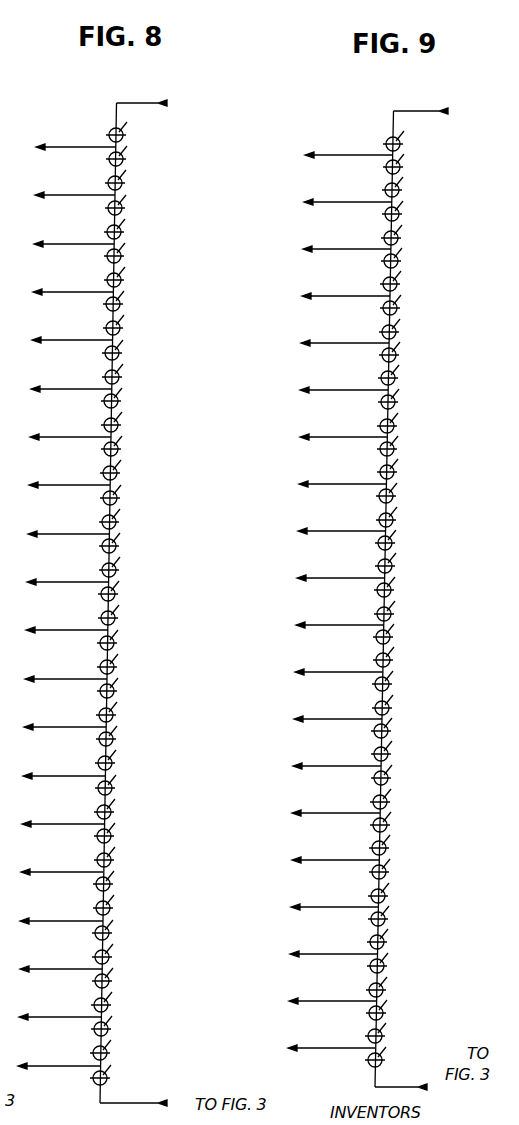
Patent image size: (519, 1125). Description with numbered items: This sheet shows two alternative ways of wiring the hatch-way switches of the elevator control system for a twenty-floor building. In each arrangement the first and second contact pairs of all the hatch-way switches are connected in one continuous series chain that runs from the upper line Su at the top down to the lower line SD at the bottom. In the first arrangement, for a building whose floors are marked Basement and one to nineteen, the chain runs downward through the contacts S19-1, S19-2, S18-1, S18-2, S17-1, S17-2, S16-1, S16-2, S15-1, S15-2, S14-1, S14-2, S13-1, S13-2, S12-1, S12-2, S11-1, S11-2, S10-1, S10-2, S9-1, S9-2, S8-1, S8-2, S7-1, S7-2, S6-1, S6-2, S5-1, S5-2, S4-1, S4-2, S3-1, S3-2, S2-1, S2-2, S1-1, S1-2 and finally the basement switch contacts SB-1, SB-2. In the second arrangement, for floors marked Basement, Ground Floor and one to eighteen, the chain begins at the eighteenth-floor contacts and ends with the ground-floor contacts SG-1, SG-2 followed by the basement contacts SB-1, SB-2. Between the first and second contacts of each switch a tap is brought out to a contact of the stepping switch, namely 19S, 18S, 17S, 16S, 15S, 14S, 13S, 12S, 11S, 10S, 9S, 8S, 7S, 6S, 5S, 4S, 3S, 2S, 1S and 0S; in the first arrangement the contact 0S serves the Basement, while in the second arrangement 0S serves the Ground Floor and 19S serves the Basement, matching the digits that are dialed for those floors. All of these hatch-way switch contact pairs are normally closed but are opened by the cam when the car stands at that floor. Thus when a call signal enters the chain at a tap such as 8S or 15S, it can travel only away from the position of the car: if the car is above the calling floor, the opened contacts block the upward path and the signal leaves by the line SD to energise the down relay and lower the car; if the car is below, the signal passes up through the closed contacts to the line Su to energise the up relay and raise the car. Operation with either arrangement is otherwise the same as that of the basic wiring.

In FIG. 8, the upper line Su is at (153, 103).
In FIG. 9, the upper line Su is at (432, 111).
In FIG. 8, the lower line SD is at (146, 1103).
In FIG. 9, the lower line SD is at (415, 1087).
In FIG. 8, the stepping switch contact for floor nineteen 19S is at (61, 147).
In FIG. 9, the stepping switch contact for floor nineteen 19S is at (316, 1048).
In FIG. 8, the stepping switch contact for floor eighteen 18S is at (60, 195).
In FIG. 9, the stepping switch contact for floor eighteen 18S is at (334, 155).
In FIG. 8, the stepping switch contact for floor seventeen 17S is at (59, 244).
In FIG. 9, the stepping switch contact for floor seventeen 17S is at (333, 202).
In FIG. 8, the stepping switch contact for floor sixteen 16S is at (58, 292).
In FIG. 9, the stepping switch contact for floor sixteen 16S is at (332, 249).
In FIG. 8, the stepping switch contact for floor fifteen 15S is at (57, 340).
In FIG. 9, the stepping switch contact for floor fifteen 15S is at (331, 296).
In FIG. 8, the stepping switch contact for floor fourteen 14S is at (56, 389).
In FIG. 9, the stepping switch contact for floor fourteen 14S is at (330, 343).
In FIG. 8, the stepping switch contact for floor thirteen 13S is at (55, 437).
In FIG. 9, the stepping switch contact for floor thirteen 13S is at (329, 390).
In FIG. 8, the stepping switch contact for floor twelve 12S is at (55, 485).
In FIG. 9, the stepping switch contact for floor twelve 12S is at (328, 437).
In FIG. 8, the stepping switch contact for floor eleven 11S is at (54, 534).
In FIG. 9, the stepping switch contact for floor eleven 11S is at (327, 484).
In FIG. 8, the stepping switch contact for floor ten 10S is at (54, 582).
In FIG. 9, the stepping switch contact for floor ten 10S is at (326, 531).
In FIG. 8, the stepping switch contact for floor nine 9S is at (56, 630).
In FIG. 9, the stepping switch contact for floor nine 9S is at (330, 578).
In FIG. 8, the stepping switch contact for floor eight 8S is at (55, 679).
In FIG. 9, the stepping switch contact for floor eight 8S is at (329, 625).
In FIG. 8, the stepping switch contact for floor seven 7S is at (54, 727).
In FIG. 9, the stepping switch contact for floor seven 7S is at (328, 672).
In FIG. 8, the stepping switch contact for floor six 6S is at (53, 776).
In FIG. 9, the stepping switch contact for floor six 6S is at (327, 719).
In FIG. 8, the stepping switch contact for floor five 5S is at (52, 824).
In FIG. 9, the stepping switch contact for floor five 5S is at (326, 766).
In FIG. 8, the stepping switch contact for floor four 4S is at (51, 872).
In FIG. 9, the stepping switch contact for floor four 4S is at (325, 813).
In FIG. 8, the stepping switch contact for floor three 3S is at (51, 921).
In FIG. 9, the stepping switch contact for floor three 3S is at (325, 860).
In FIG. 8, the stepping switch contact for floor two 2S is at (51, 969).
In FIG. 9, the stepping switch contact for floor two 2S is at (324, 907).
In FIG. 8, the stepping switch contact for floor one 1S is at (50, 1017).
In FIG. 9, the stepping switch contact for floor one 1S is at (323, 954).
In FIG. 8, the stepping switch contact for dialed zero 0S is at (50, 1066).
In FIG. 9, the stepping switch contact for dialed zero 0S is at (322, 1001).
In FIG. 8, the first contacts of nineteenth-floor hatch-way switch S19-1 is at (133, 132).
In FIG. 8, the second contacts of nineteenth-floor hatch-way switch S19-2 is at (133, 156).
In FIG. 8, the first contacts of eighteenth-floor hatch-way switch S18-1 is at (132, 180).
In FIG. 9, the first contacts of eighteenth-floor hatch-way switch S18-1 is at (410, 141).
In FIG. 8, the second contacts of eighteenth-floor hatch-way switch S18-2 is at (132, 205).
In FIG. 9, the second contacts of eighteenth-floor hatch-way switch S18-2 is at (410, 164).
In FIG. 8, the first contacts of seventeenth-floor hatch-way switch S17-1 is at (131, 229).
In FIG. 9, the first contacts of seventeenth-floor hatch-way switch S17-1 is at (409, 187).
In FIG. 8, the second contacts of seventeenth-floor hatch-way switch S17-2 is at (131, 253).
In FIG. 9, the second contacts of seventeenth-floor hatch-way switch S17-2 is at (409, 211).
In FIG. 8, the first contacts of sixteenth-floor hatch-way switch S16-1 is at (131, 277).
In FIG. 9, the first contacts of sixteenth-floor hatch-way switch S16-1 is at (408, 235).
In FIG. 8, the second contacts of sixteenth-floor hatch-way switch S16-2 is at (130, 301).
In FIG. 9, the second contacts of sixteenth-floor hatch-way switch S16-2 is at (408, 258).
In FIG. 8, the first contacts of fifteenth-floor hatch-way switch S15-1 is at (130, 325).
In FIG. 9, the first contacts of fifteenth-floor hatch-way switch S15-1 is at (407, 281).
In FIG. 8, the second contacts of fifteenth-floor hatch-way switch S15-2 is at (129, 350).
In FIG. 9, the second contacts of fifteenth-floor hatch-way switch S15-2 is at (407, 305).
In FIG. 8, the first contacts of fourteenth-floor hatch-way switch S14-1 is at (129, 374).
In FIG. 9, the first contacts of fourteenth-floor hatch-way switch S14-1 is at (406, 329).
In FIG. 8, the second contacts of fourteenth-floor hatch-way switch S14-2 is at (128, 398).
In FIG. 9, the second contacts of fourteenth-floor hatch-way switch S14-2 is at (406, 352).
In FIG. 8, the first contacts of thirteenth-floor hatch-way switch S13-1 is at (128, 422).
In FIG. 9, the first contacts of thirteenth-floor hatch-way switch S13-1 is at (405, 375).
In FIG. 8, the second contacts of thirteenth-floor hatch-way switch S13-2 is at (128, 446).
In FIG. 9, the second contacts of thirteenth-floor hatch-way switch S13-2 is at (405, 399).
In FIG. 8, the first contacts of twelfth-floor hatch-way switch S12-1 is at (127, 470).
In FIG. 9, the first contacts of twelfth-floor hatch-way switch S12-1 is at (404, 423).
In FIG. 8, the second contacts of twelfth-floor hatch-way switch S12-2 is at (127, 495).
In FIG. 9, the second contacts of twelfth-floor hatch-way switch S12-2 is at (404, 446).
In FIG. 8, the first contacts of eleventh-floor hatch-way switch S11-1 is at (126, 519).
In FIG. 9, the first contacts of eleventh-floor hatch-way switch S11-1 is at (404, 469).
In FIG. 8, the second contacts of eleventh-floor hatch-way switch S11-2 is at (126, 543).
In FIG. 9, the second contacts of eleventh-floor hatch-way switch S11-2 is at (403, 493).
In FIG. 8, the first contacts of tenth-floor hatch-way switch S10-1 is at (126, 567).
In FIG. 9, the first contacts of tenth-floor hatch-way switch S10-1 is at (403, 517).
In FIG. 8, the second contacts of tenth-floor hatch-way switch S10-2 is at (125, 591).
In FIG. 9, the second contacts of tenth-floor hatch-way switch S10-2 is at (402, 540).
In FIG. 8, the first contacts of ninth-floor hatch-way switch S9-1 is at (122, 615).
In FIG. 9, the first contacts of ninth-floor hatch-way switch S9-1 is at (399, 563).
In FIG. 8, the second contacts of ninth-floor hatch-way switch S9-2 is at (121, 640).
In FIG. 9, the second contacts of ninth-floor hatch-way switch S9-2 is at (398, 587).
In FIG. 8, the first contacts of eighth-floor hatch-way switch S8-1 is at (121, 664).
In FIG. 9, the first contacts of eighth-floor hatch-way switch S8-1 is at (398, 611).
In FIG. 8, the second contacts of eighth-floor hatch-way switch S8-2 is at (121, 688).
In FIG. 9, the second contacts of eighth-floor hatch-way switch S8-2 is at (397, 634).
In FIG. 8, the first contacts of seventh-floor hatch-way switch S7-1 is at (120, 712).
In FIG. 9, the first contacts of seventh-floor hatch-way switch S7-1 is at (397, 657).
In FIG. 8, the second contacts of seventh-floor hatch-way switch S7-2 is at (120, 736).
In FIG. 9, the second contacts of seventh-floor hatch-way switch S7-2 is at (396, 681).
In FIG. 8, the first contacts of sixth-floor hatch-way switch S6-1 is at (119, 760).
In FIG. 9, the first contacts of sixth-floor hatch-way switch S6-1 is at (396, 705).
In FIG. 8, the second contacts of sixth-floor hatch-way switch S6-2 is at (119, 785).
In FIG. 9, the second contacts of sixth-floor hatch-way switch S6-2 is at (395, 728).
In FIG. 8, the first contacts of fifth-floor hatch-way switch S5-1 is at (118, 809).
In FIG. 9, the first contacts of fifth-floor hatch-way switch S5-1 is at (395, 751).
In FIG. 8, the second contacts of fifth-floor hatch-way switch S5-2 is at (118, 833).
In FIG. 9, the second contacts of fifth-floor hatch-way switch S5-2 is at (395, 775).
In FIG. 8, the first contacts of fourth-floor hatch-way switch S4-1 is at (118, 857).
In FIG. 9, the first contacts of fourth-floor hatch-way switch S4-1 is at (394, 799).
In FIG. 8, the second contacts of fourth-floor hatch-way switch S4-2 is at (117, 881).
In FIG. 9, the second contacts of fourth-floor hatch-way switch S4-2 is at (394, 822).
In FIG. 8, the first contacts of third-floor hatch-way switch S3-1 is at (117, 905).
In FIG. 9, the first contacts of third-floor hatch-way switch S3-1 is at (393, 845).
In FIG. 8, the second contacts of third-floor hatch-way switch S3-2 is at (116, 930).
In FIG. 9, the second contacts of third-floor hatch-way switch S3-2 is at (393, 869).
In FIG. 8, the first contacts of second-floor hatch-way switch S2-1 is at (116, 954).
In FIG. 9, the first contacts of second-floor hatch-way switch S2-1 is at (392, 893).
In FIG. 8, the second contacts of second-floor hatch-way switch S2-2 is at (116, 978).
In FIG. 9, the second contacts of second-floor hatch-way switch S2-2 is at (392, 916).
In FIG. 8, the first contacts of first-floor hatch-way switch S1-1 is at (115, 1002).
In FIG. 9, the first contacts of first-floor hatch-way switch S1-1 is at (391, 939).
In FIG. 8, the second contacts of first-floor hatch-way switch S1-2 is at (115, 1026).
In FIG. 9, the second contacts of first-floor hatch-way switch S1-2 is at (391, 963).
In FIG. 9, the first contacts of ground-floor hatch-way switch SG-1 is at (391, 987).
In FIG. 9, the second contacts of ground-floor hatch-way switch SG-2 is at (391, 1010).
In FIG. 8, the first contacts of basement hatch-way switch SB-1 is at (114, 1050).
In FIG. 9, the first contacts of basement hatch-way switch SB-1 is at (389, 1033).
In FIG. 8, the second contacts of basement hatch-way switch SB-2 is at (114, 1075).
In FIG. 9, the second contacts of basement hatch-way switch SB-2 is at (389, 1057).